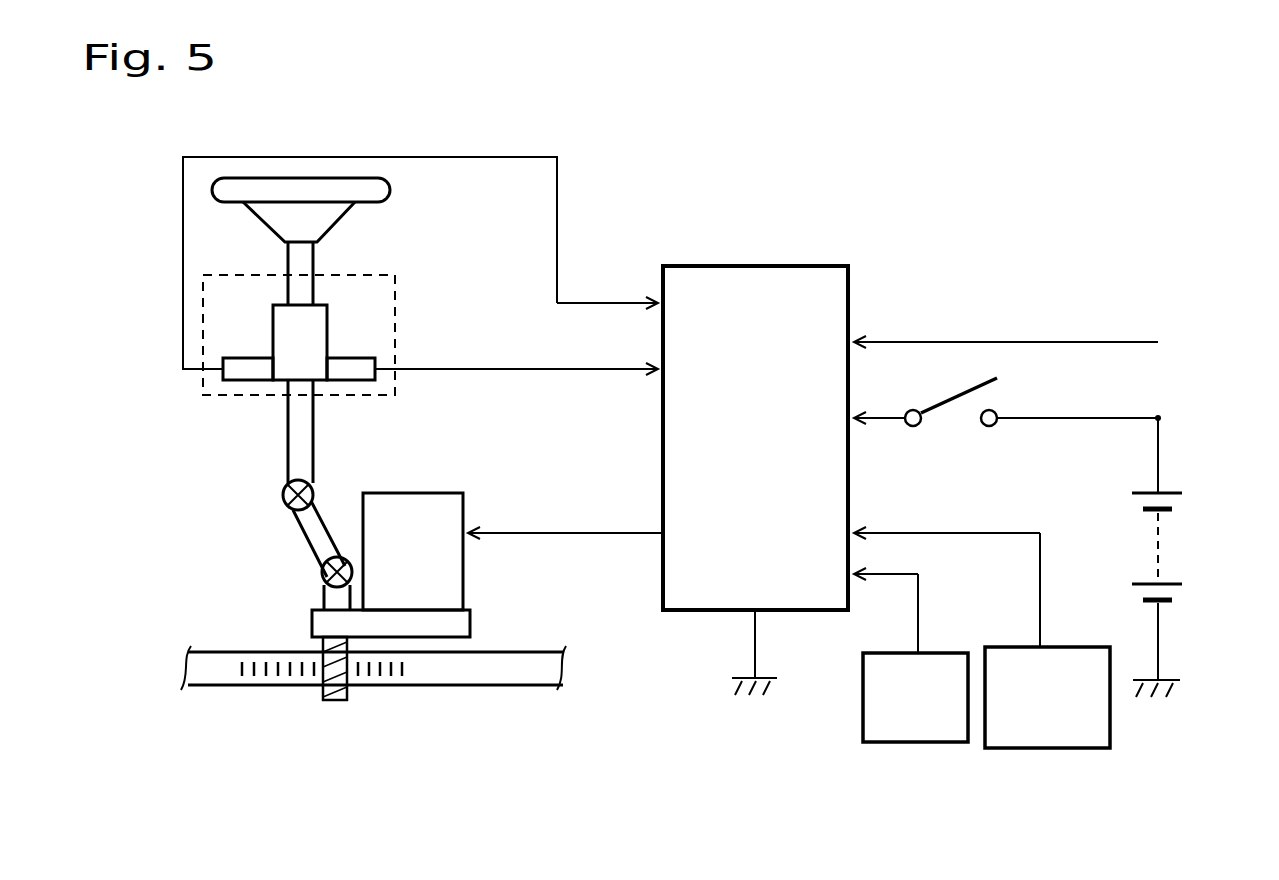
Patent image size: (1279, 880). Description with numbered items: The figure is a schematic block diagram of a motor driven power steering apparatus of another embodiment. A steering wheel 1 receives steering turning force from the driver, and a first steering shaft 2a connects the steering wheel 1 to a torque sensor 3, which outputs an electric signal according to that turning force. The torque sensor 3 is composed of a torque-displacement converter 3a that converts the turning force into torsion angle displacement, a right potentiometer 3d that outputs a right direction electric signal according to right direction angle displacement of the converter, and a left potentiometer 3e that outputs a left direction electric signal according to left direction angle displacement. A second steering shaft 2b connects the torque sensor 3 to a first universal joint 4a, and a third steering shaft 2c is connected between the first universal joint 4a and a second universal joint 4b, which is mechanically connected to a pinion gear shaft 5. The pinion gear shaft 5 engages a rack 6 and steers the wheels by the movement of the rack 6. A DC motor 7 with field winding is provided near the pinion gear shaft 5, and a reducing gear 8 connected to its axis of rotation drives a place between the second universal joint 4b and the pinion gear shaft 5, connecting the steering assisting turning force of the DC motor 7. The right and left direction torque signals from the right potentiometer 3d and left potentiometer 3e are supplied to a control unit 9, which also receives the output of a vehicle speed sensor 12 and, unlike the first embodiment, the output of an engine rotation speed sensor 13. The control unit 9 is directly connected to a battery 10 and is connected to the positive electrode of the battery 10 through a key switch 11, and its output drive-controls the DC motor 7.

The steering wheel 1 is at (390, 190).
The first steering shaft 2a is at (305, 265).
The second steering shaft 2b is at (300, 452).
The third steering shaft 2c is at (318, 544).
The torque sensor 3 is at (385, 296).
The torque-displacement converter 3a is at (283, 325).
The right potentiometer 3d is at (357, 370).
The left potentiometer 3e is at (249, 372).
The first universal joint 4a is at (283, 491).
The second universal joint 4b is at (322, 577).
The pinion gear shaft 5 is at (350, 695).
The rack 6 is at (476, 675).
The DC motor 7 is at (435, 493).
The reducing gear 8 is at (470, 626).
The control unit 9 is at (695, 612).
The battery 10 is at (1163, 550).
The key switch 11 is at (957, 420).
The vehicle speed sensor 12 is at (910, 745).
The engine rotation speed sensor 13 is at (1035, 750).